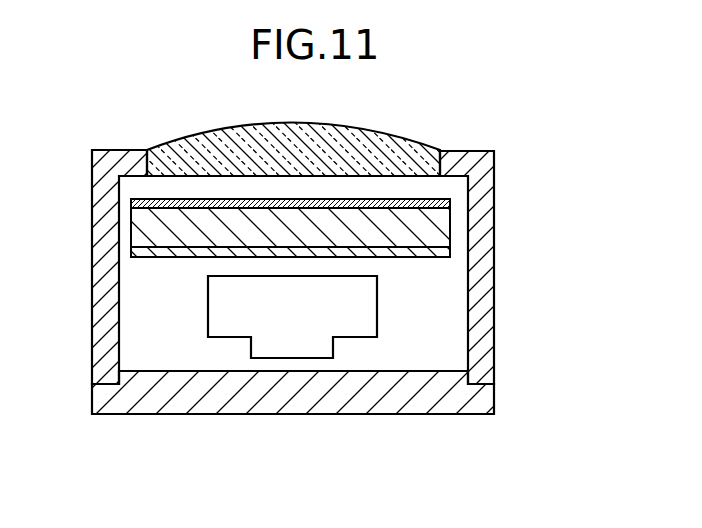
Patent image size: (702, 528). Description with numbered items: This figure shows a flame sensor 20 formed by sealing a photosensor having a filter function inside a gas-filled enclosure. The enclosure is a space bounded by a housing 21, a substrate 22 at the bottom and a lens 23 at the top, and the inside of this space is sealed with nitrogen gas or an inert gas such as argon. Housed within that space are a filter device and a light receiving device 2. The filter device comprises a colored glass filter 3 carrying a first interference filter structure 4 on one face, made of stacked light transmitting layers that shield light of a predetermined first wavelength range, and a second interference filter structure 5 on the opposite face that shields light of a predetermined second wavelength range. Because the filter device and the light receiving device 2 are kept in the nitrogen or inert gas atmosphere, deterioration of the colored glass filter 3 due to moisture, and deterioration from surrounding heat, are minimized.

The light receiving device 2 is at (207, 308).
The colored glass filter 3 is at (289, 248).
The first interference filter structure 4 is at (450, 200).
The second interference filter structure 5 is at (437, 257).
The flame sensor 20 is at (311, 250).
The housing 21 is at (494, 153).
The substrate 22 is at (487, 392).
The lens 23 is at (197, 142).